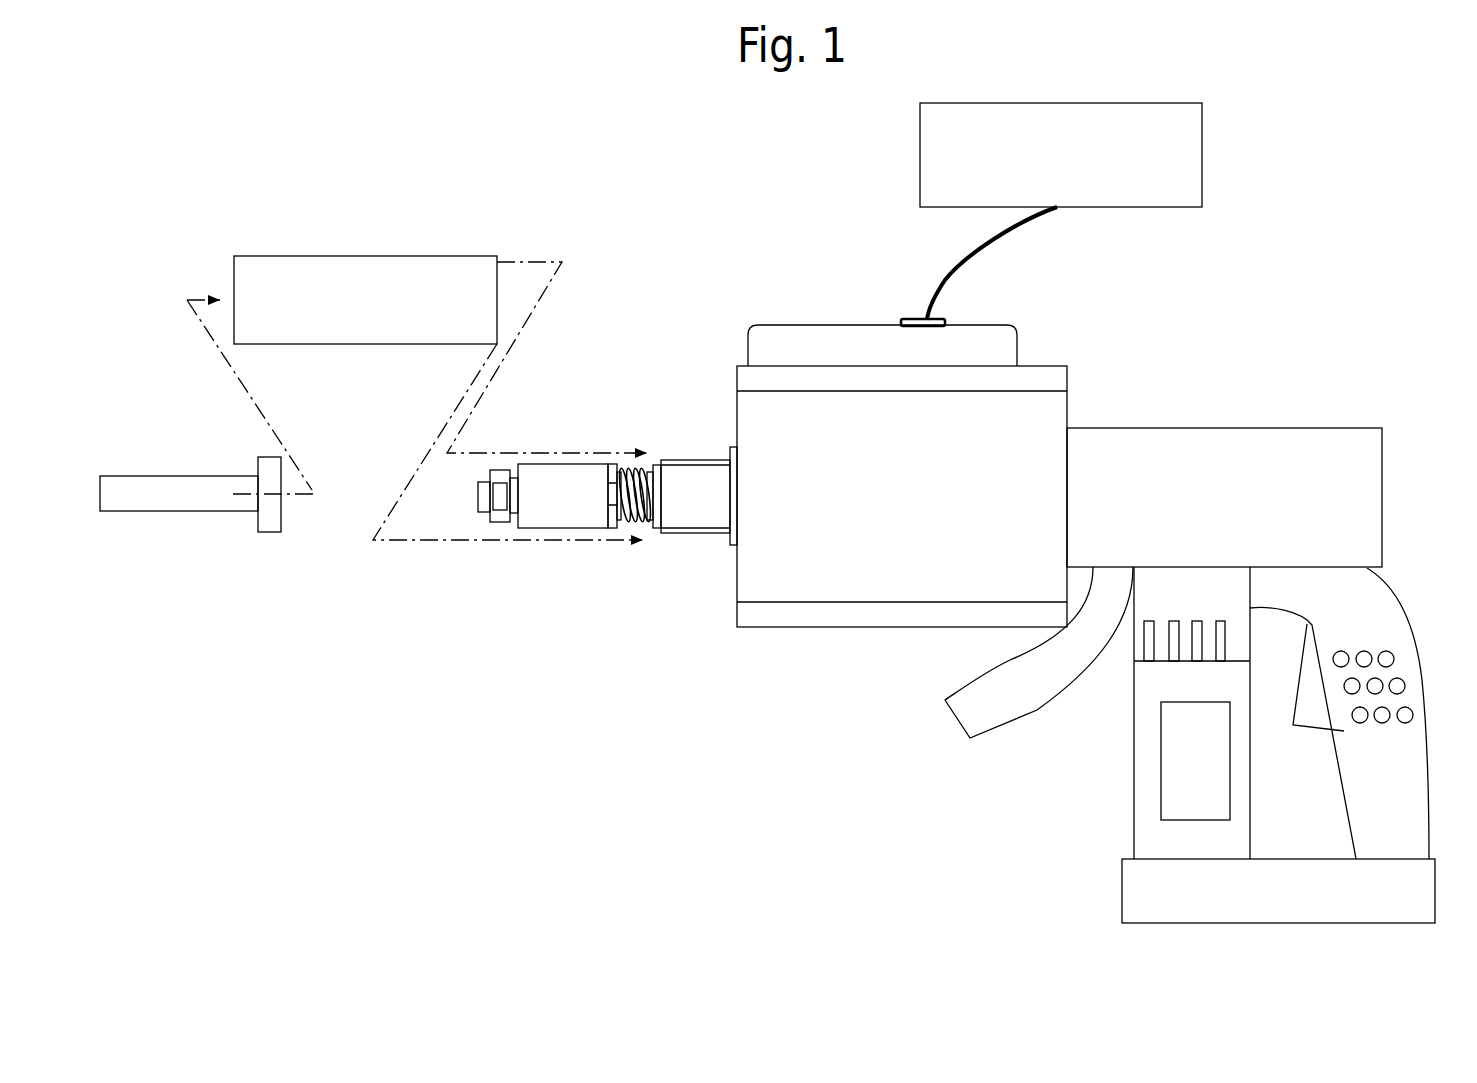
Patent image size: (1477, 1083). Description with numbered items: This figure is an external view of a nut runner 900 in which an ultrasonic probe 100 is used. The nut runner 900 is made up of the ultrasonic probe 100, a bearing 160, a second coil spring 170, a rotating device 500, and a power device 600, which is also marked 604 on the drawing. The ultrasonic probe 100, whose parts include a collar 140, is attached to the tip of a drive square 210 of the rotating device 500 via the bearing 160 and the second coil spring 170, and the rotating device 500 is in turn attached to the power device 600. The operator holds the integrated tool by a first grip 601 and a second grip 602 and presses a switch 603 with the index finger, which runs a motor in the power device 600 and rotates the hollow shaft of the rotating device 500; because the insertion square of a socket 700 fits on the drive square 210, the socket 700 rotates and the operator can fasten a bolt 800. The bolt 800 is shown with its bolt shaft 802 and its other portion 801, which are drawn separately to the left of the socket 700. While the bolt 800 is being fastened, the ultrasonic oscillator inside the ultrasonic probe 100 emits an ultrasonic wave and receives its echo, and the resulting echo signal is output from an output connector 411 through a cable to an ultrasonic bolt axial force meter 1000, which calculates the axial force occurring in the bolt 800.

The ultrasonic probe 100 is at (532, 530).
The collar 140 is at (562, 464).
The bearing 160 is at (653, 540).
The second coil spring 170 is at (632, 525).
The drive square 210 is at (678, 460).
The output connector 411 is at (945, 318).
The rotating device 500 is at (1050, 366).
The power device 600 is at (1251, 636).
The first grip 601 is at (998, 717).
The second grip 602 is at (1408, 615).
The switch 603 is at (1315, 730).
The handle housing 604 is at (1278, 745).
The socket 700 is at (288, 256).
The bolt 800 is at (190, 565).
The bolt head 801 is at (273, 533).
The bolt shaft 802 is at (168, 511).
The nut runner 900 is at (1187, 302).
The ultrasonic bolt axial force meter 1000 is at (1202, 160).